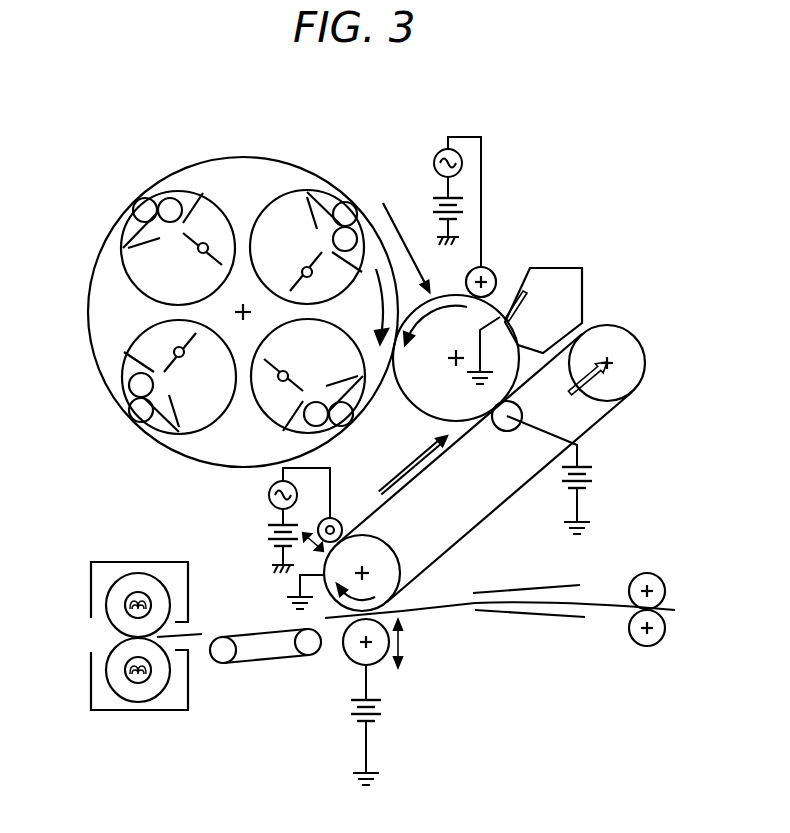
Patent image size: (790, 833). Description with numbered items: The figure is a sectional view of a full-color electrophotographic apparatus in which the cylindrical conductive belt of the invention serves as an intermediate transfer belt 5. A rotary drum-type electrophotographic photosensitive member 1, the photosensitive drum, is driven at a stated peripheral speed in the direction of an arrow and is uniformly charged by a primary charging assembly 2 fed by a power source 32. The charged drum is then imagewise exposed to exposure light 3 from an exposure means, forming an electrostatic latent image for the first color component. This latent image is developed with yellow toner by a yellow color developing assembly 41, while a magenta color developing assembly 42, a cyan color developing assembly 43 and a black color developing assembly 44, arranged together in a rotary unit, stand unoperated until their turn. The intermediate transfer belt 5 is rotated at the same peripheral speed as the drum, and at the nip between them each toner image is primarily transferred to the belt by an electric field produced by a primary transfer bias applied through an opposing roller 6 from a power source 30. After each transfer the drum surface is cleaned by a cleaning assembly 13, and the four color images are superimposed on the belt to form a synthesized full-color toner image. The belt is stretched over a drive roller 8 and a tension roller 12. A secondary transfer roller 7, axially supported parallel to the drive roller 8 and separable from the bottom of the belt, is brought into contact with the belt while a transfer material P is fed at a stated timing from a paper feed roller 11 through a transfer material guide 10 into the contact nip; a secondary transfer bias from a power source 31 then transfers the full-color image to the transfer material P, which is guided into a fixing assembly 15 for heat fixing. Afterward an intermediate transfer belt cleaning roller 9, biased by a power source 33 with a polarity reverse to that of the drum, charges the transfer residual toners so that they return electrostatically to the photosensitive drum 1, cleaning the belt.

The electrophotographic photosensitive member 1 is at (448, 298).
The primary charging assembly 2 is at (493, 272).
The exposure light 3 is at (400, 233).
The intermediate transfer belt 5 is at (600, 423).
The opposing roller 6 is at (507, 435).
The secondary transfer roller 7 is at (344, 653).
The drive roller 8 is at (392, 552).
The intermediate transfer belt cleaning roller 9 is at (336, 516).
The transfer material guide 10 is at (543, 618).
The paper feed roller 11 is at (666, 587).
The tension roller 12 is at (644, 360).
The cleaning assembly 13 is at (582, 292).
The fixing assembly 15 is at (91, 578).
The power source 30 is at (600, 475).
The power source 31 is at (382, 708).
The power source 32 is at (432, 198).
The power source 33 is at (267, 530).
The yellow color developing assembly 41 is at (283, 187).
The magenta color developing assembly 42 is at (113, 268).
The cyan color developing assembly 43 is at (123, 348).
The black color developing assembly 44 is at (265, 415).
The transfer material P is at (443, 610).